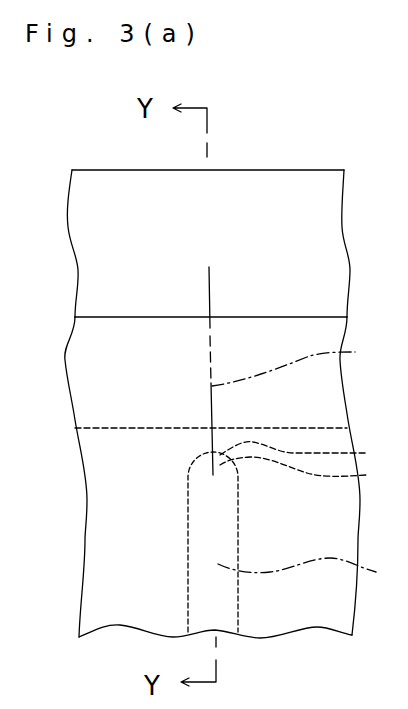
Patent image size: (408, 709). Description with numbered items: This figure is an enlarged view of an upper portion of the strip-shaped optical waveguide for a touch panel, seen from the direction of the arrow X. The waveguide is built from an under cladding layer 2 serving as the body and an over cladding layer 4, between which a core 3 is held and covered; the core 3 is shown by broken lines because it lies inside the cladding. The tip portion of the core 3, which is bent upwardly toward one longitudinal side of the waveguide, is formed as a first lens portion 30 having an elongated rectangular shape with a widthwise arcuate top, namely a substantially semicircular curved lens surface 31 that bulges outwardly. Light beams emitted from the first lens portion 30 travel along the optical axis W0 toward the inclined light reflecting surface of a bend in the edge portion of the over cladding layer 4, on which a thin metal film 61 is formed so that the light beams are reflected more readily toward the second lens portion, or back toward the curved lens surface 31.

The thin metal film 61 is at (320, 243).
The optical axis W0 is at (301, 366).
The under cladding layer 2 is at (333, 432).
The curved lens surface 31 is at (307, 453).
The first lens portion 30 is at (307, 472).
The core 3 is at (307, 572).
The over cladding layer 4 is at (332, 618).